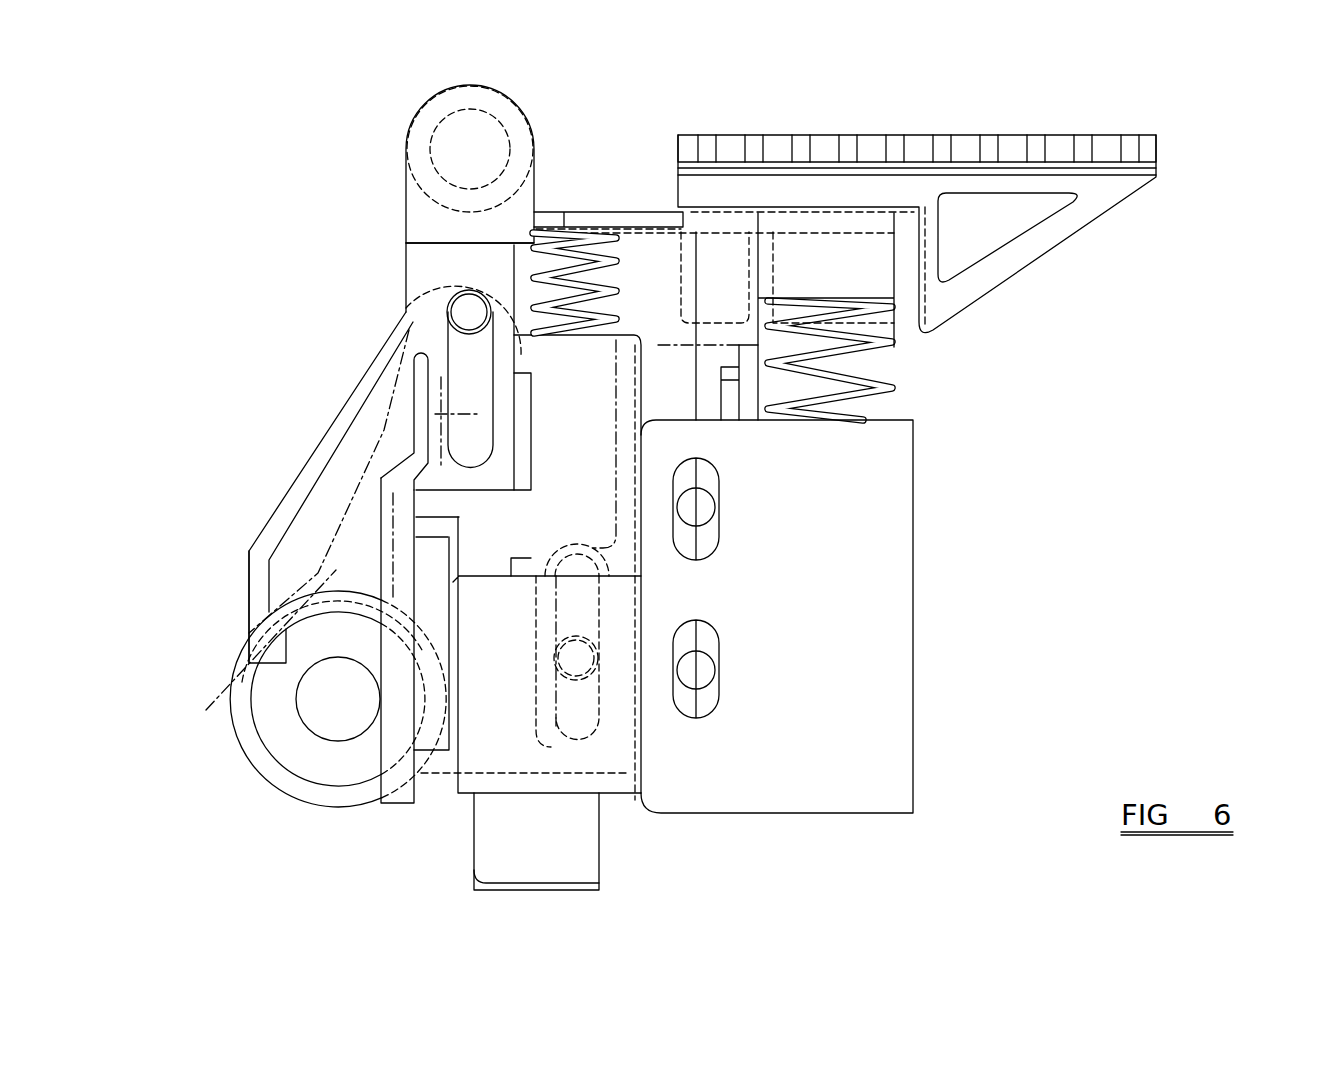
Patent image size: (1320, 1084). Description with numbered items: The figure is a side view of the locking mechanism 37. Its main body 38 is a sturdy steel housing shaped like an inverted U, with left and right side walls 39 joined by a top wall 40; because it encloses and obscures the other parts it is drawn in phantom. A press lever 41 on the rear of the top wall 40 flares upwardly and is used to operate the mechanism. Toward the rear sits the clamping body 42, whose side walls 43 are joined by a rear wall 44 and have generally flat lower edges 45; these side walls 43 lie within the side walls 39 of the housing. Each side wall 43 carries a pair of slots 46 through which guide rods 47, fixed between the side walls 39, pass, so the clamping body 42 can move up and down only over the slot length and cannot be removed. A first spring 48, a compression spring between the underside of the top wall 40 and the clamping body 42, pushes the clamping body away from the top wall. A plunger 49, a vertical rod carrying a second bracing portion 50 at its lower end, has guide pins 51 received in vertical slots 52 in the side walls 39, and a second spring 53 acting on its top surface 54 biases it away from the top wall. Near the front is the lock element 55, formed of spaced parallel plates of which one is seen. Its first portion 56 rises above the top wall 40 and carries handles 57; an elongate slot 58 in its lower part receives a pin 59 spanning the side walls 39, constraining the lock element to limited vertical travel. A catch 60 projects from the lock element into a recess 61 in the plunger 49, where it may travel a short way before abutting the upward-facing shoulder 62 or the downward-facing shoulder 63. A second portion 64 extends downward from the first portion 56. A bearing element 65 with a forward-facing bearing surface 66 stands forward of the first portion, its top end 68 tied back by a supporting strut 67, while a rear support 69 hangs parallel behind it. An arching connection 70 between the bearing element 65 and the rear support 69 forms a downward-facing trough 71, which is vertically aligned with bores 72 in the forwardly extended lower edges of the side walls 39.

The locking mechanism 37 is at (1133, 285).
The main body 38 is at (690, 197).
The side walls 39 is at (727, 280).
The top wall 40 is at (799, 150).
The press lever 41 is at (1063, 170).
The clamping body 42 is at (890, 530).
The side walls 43 is at (823, 582).
The rear wall 44 is at (913, 660).
The lower edges 45 is at (835, 813).
The slots 46 is at (707, 705).
The guide rods 47 is at (697, 677).
The first spring 48 is at (887, 400).
The plunger 49 is at (472, 790).
The second bracing portion 50 is at (490, 867).
The guide pins 51 is at (578, 660).
The slots 52 is at (580, 682).
The second spring 53 is at (615, 215).
The top surface 54 is at (627, 350).
The lock element 55 is at (412, 163).
The first portion 56 is at (405, 215).
The handles 57 is at (523, 120).
The elongate slot 58 is at (437, 414).
The pin 59 is at (465, 312).
The catch 60 is at (312, 445).
The recess 61 is at (524, 498).
The upward-facing shoulder 62 is at (526, 524).
The downward-facing shoulder 63 is at (517, 372).
The second portion 64 is at (334, 417).
The bearing element 65 is at (246, 593).
The bearing surface 66 is at (246, 620).
The supporting strut 67 is at (372, 396).
The top end 68 is at (252, 552).
The rear support 69 is at (393, 807).
The arching connection 70 is at (526, 545).
The trough 71 is at (338, 699).
The bores 72 is at (304, 708).